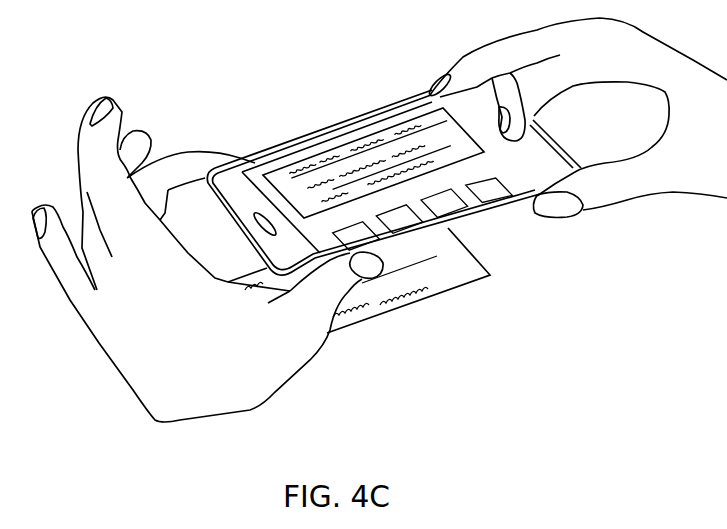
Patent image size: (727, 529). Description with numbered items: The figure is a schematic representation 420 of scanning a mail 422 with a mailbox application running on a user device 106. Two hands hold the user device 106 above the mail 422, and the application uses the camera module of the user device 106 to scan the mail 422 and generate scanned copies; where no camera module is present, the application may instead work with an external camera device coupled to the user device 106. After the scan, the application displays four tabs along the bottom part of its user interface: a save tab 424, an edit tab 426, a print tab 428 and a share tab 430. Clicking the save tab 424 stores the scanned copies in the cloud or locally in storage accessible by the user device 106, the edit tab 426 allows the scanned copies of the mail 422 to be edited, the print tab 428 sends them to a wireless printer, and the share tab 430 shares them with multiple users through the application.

The user device 106 is at (328, 128).
The schematic representation 420 is at (637, 414).
The mail 422 is at (478, 261).
The save tab 424 is at (368, 236).
The edit tab 426 is at (414, 220).
The print tab 428 is at (459, 203).
The share tab 430 is at (505, 186).